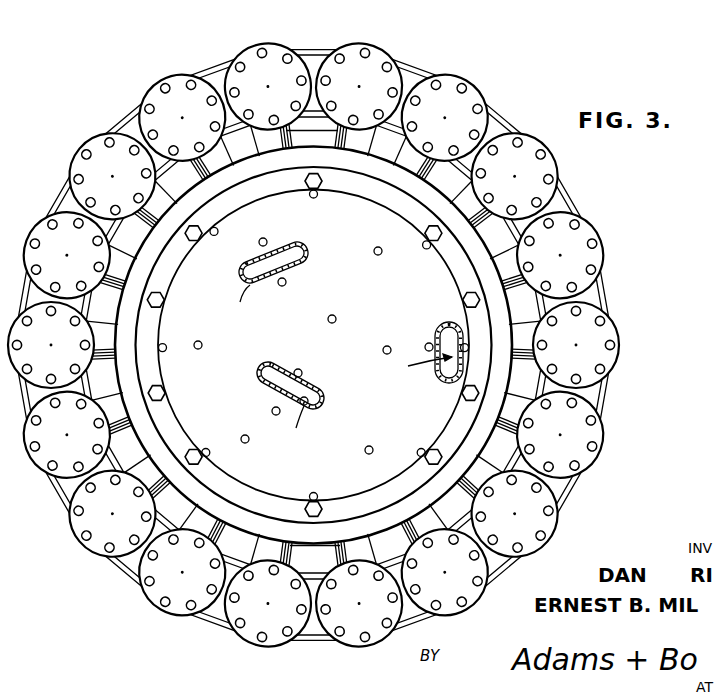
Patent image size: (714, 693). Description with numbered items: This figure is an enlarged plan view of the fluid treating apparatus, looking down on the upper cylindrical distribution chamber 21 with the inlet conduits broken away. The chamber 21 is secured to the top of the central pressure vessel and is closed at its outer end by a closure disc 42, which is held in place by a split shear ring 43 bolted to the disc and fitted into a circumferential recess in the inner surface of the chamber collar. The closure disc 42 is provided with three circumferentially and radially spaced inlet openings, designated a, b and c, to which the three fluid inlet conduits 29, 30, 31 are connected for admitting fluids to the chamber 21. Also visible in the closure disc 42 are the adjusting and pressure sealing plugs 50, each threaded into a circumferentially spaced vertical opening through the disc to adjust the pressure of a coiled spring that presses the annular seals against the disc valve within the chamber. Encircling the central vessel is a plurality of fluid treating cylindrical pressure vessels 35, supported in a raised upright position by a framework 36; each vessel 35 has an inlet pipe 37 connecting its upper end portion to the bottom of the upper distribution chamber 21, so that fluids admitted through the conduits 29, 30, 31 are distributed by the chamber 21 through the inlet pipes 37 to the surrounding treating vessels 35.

The upper cylindrical distribution chamber 21 is at (513, 317).
The fluid inlet conduit 29 is at (442, 383).
The fluid inlet conduit 30 is at (304, 256).
The fluid inlet conduit 31 is at (318, 398).
The fluid treating cylindrical pressure vessel 35 is at (440, 60).
The framework 36 is at (578, 499).
The inlet pipe 37 is at (397, 128).
The closure disc 42 is at (406, 311).
The split shear ring 43 is at (372, 200).
The adjusting and pressure sealing plug 50 is at (334, 323).